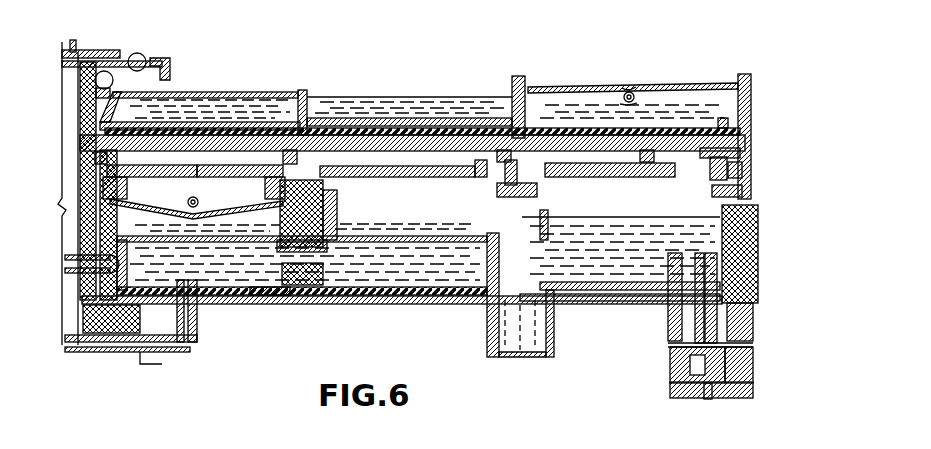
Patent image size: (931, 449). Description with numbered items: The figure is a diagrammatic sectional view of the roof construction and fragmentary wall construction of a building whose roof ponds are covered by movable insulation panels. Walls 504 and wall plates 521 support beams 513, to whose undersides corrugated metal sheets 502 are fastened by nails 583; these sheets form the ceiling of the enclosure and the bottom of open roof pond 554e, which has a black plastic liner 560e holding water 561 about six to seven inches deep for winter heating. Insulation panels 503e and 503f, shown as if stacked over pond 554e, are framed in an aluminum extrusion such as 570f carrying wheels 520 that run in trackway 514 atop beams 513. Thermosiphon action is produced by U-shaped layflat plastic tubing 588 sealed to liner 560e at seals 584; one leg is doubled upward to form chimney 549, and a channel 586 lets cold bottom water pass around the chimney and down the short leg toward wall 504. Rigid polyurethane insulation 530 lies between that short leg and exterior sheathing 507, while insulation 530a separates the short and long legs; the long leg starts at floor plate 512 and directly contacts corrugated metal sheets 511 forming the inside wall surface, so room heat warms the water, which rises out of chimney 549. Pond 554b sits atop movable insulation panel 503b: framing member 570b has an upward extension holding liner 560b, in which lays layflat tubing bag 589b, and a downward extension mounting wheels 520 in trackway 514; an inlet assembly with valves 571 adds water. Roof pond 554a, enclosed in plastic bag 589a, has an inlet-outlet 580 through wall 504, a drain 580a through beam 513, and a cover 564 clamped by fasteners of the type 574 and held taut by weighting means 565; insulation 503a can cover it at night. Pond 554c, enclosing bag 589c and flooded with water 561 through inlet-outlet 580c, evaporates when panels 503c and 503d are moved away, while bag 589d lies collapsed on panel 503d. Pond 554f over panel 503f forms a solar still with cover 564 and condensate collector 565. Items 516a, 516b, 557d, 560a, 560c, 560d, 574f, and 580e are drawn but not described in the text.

The corrugated metal sheets 502 is at (458, 300).
The insulation panel 503a is at (146, 164).
The movable insulation panel 503b is at (247, 163).
The insulation panel 503c is at (481, 178).
The insulation panel 503d is at (445, 148).
The insulation panel 503e is at (650, 178).
The insulation panel 503f is at (750, 140).
The wall 504 is at (752, 383).
The exterior sheathing 507 is at (754, 343).
The corrugated metal sheets 511 is at (670, 356).
The floor plate 512 is at (748, 398).
The beams 513 is at (752, 265).
The trackway 514 is at (748, 192).
The end wall 516a is at (750, 205).
The end wall 516b is at (548, 204).
The wheels 520 is at (750, 168).
The wall plates 521 is at (150, 346).
The rigid polyurethane insulation 530 is at (752, 360).
The insulation 530a is at (752, 320).
The chimney 549 is at (752, 276).
The roof pond 554a is at (218, 236).
The pond 554b is at (218, 108).
The roof pond 554c is at (465, 232).
The roof pond 554e is at (635, 224).
The pond 554f is at (598, 126).
The liquid chamber 557d is at (410, 90).
The chamber wall 560a is at (250, 304).
The black plastic liner 560b is at (243, 130).
The chamber wall 560c is at (384, 300).
The chamber wall 560d is at (512, 88).
The black plastic liner 560e is at (752, 240).
The water 561 is at (310, 95).
The cover 564 is at (579, 86).
The weighting means 565 is at (640, 100).
The framing member 570b is at (76, 136).
The aluminum extrusion 570f is at (752, 150).
The inlet assembly with valves 571 is at (98, 56).
The lining fasteners 574 is at (542, 200).
The post 574f is at (519, 76).
The inlet-outlet 580 is at (190, 330).
The drain 580a is at (118, 240).
The inlet-outlet and valve assembly 580c is at (492, 342).
The post 580e is at (553, 335).
The nails 583 is at (505, 352).
The seals 584 is at (752, 306).
The channel 586 is at (300, 300).
The layflat plastic tubing 588 is at (707, 392).
The plastic bag 589a is at (262, 298).
The layflat tubing 589b is at (310, 98).
The bag 589c is at (325, 210).
The plastic bag 589d is at (430, 120).